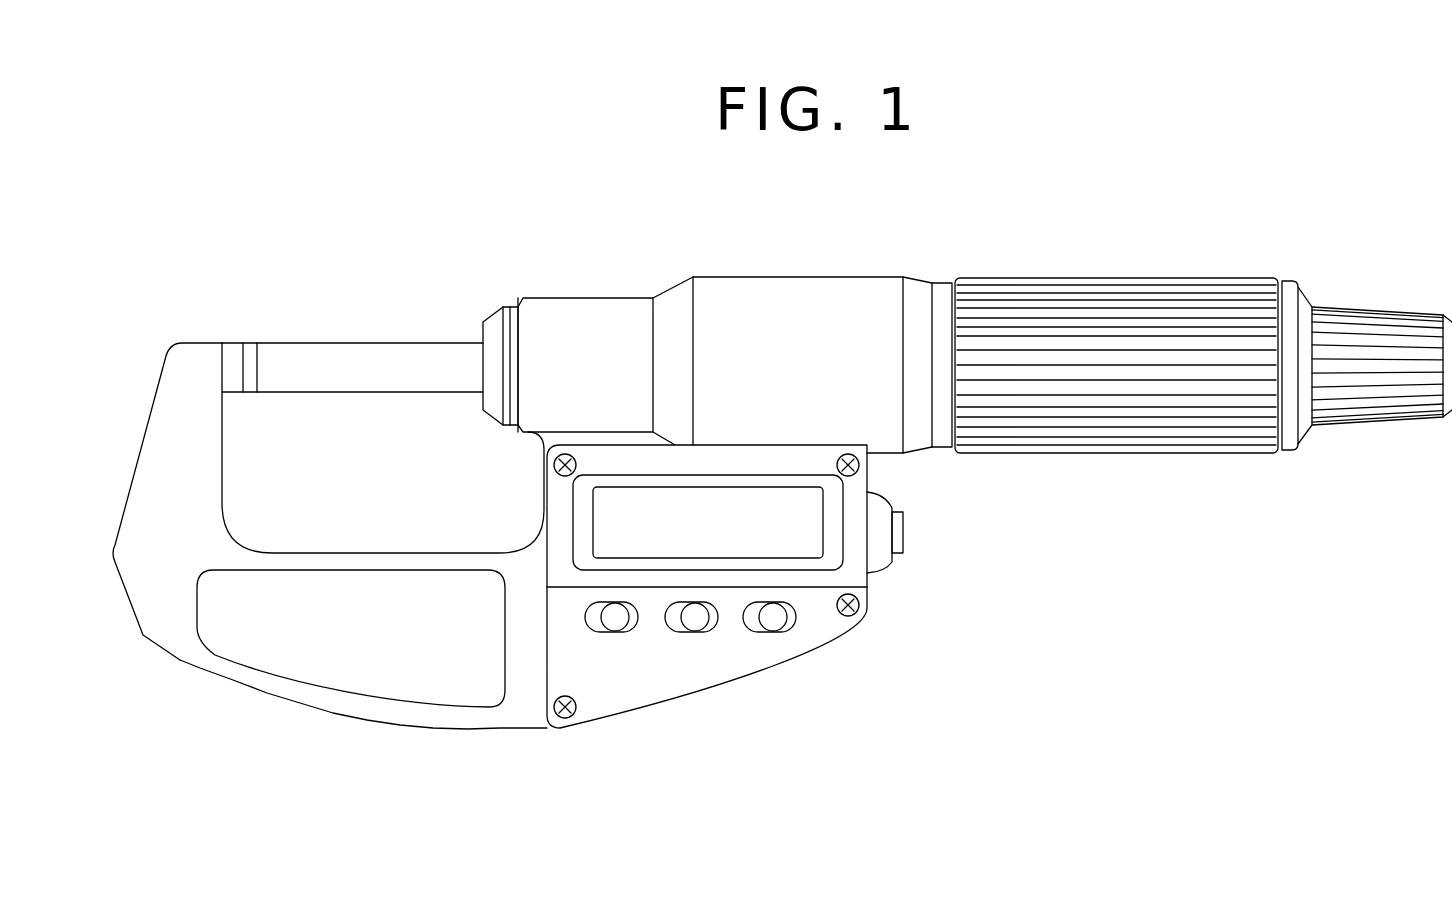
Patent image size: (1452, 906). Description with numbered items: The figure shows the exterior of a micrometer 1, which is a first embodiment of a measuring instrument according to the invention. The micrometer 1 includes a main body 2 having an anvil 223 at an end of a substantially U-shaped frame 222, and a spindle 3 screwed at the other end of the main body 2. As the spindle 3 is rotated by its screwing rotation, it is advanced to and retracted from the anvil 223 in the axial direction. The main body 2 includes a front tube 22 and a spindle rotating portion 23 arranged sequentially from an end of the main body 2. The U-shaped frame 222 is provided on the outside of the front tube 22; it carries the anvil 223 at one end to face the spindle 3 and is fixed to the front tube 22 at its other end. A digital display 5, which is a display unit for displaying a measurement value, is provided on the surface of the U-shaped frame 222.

The micrometer 1 is at (1048, 148).
The main body 2 is at (717, 317).
The front tube 22 is at (590, 315).
The spindle rotating portion 23 is at (1153, 258).
The spindle 3 is at (362, 352).
The digital display 5 is at (785, 537).
The U-shaped frame 222 is at (525, 703).
The anvil 223 is at (233, 352).